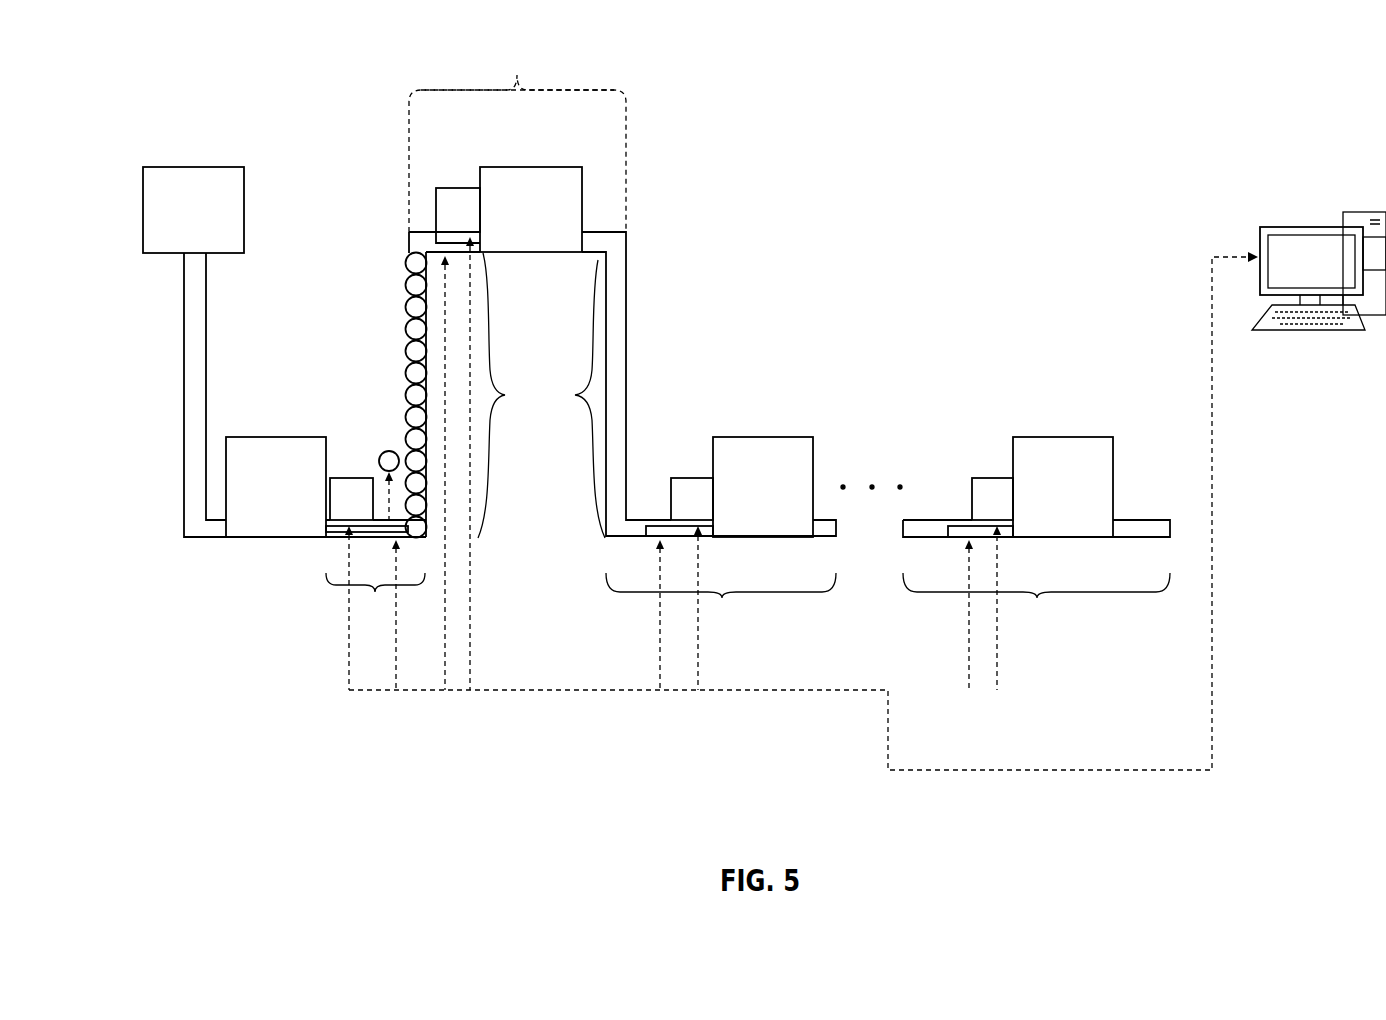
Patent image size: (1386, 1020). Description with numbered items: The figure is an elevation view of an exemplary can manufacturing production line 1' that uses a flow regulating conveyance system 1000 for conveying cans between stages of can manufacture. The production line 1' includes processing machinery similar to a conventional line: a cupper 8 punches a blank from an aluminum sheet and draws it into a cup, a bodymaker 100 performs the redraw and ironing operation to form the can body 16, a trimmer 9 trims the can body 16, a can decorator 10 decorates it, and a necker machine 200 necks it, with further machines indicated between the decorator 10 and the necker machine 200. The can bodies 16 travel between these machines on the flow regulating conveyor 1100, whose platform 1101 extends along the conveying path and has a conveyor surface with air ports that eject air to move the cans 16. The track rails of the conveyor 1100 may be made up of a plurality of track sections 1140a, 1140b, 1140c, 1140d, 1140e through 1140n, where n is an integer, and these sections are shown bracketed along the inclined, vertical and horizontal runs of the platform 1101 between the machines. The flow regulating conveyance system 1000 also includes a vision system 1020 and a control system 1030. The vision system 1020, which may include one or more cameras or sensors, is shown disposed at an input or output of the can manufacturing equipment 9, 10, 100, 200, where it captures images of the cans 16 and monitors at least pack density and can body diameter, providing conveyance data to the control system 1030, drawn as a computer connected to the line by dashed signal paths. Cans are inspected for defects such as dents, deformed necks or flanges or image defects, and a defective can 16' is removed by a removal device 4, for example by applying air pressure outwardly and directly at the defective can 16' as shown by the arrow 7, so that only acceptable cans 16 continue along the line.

The can manufacturing production line 1' is at (110, 45).
The flow regulating conveyance system 1000 is at (353, 96).
The flow regulating conveyor 1100 is at (255, 801).
The track section 1140a is at (375, 590).
The track section 1140b is at (505, 395).
The track section 1140c is at (517, 75).
The track section 1140d is at (575, 395).
The track section 1140e is at (722, 597).
The track section 1140n is at (1037, 597).
The platform 1101 is at (628, 294).
The vision system 1020 is at (467, 188).
The control system 1030 is at (1295, 227).
The cupper 8 is at (190, 167).
The trimmer 9 is at (530, 167).
The can decorator 10 is at (775, 437).
The bodymaker 100 is at (275, 437).
The necker machine 200 is at (1063, 437).
The can body 16 is at (388, 395).
The defective can 16' is at (377, 443).
The removal device 4 is at (450, 237).
The arrow 7 is at (390, 506).